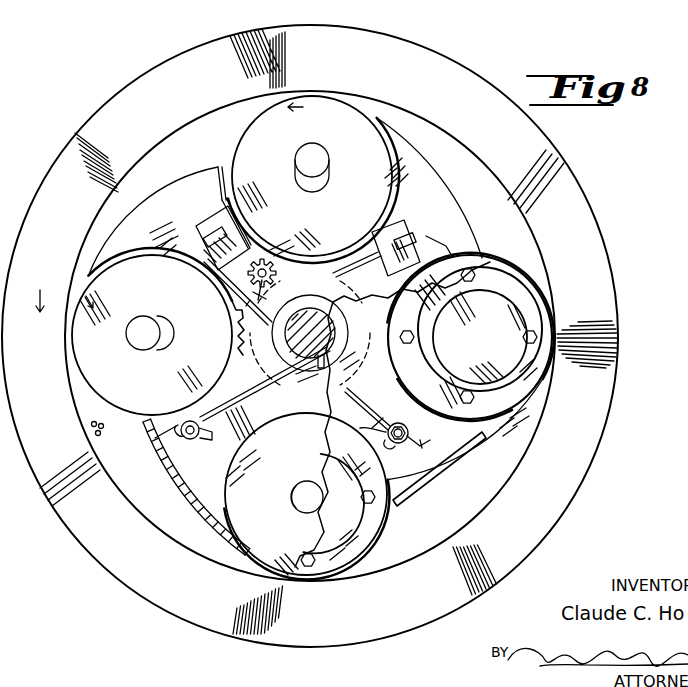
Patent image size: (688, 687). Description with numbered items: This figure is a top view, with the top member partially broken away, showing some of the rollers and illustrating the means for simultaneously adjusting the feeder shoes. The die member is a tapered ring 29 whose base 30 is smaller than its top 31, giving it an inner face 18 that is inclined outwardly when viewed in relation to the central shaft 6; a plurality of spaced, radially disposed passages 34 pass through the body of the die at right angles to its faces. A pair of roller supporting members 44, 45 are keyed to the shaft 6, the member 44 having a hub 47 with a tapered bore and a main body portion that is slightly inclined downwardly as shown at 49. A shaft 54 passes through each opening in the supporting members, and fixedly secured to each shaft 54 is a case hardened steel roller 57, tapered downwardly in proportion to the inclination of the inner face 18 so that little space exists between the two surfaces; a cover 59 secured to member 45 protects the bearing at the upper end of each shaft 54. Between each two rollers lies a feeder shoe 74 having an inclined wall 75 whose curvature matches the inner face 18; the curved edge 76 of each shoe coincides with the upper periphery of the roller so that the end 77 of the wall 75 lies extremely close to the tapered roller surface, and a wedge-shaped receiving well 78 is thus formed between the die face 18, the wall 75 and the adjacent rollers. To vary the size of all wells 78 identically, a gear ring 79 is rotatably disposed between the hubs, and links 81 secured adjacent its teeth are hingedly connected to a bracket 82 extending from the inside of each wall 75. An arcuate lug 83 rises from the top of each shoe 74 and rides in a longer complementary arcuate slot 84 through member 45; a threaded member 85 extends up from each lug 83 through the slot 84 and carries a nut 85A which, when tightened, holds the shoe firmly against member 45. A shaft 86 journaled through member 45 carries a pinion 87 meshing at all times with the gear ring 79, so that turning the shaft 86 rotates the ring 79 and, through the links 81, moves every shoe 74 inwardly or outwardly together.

The shaft 6 is at (330, 338).
The inner face 18 is at (175, 148).
The die ring 29 is at (406, 58).
The base 30 is at (220, 167).
The top 31 is at (147, 88).
The passages 34 is at (90, 428).
The roller supporting member 44 is at (474, 253).
The roller supporting member 45 is at (411, 471).
The hub 47 is at (283, 364).
The inclined body portion 49 is at (218, 450).
The shaft 54 is at (314, 144).
The roller 57 is at (72, 336).
The cover 59 is at (504, 310).
The feeder shoe 74 is at (140, 205).
The inclined wall 75 is at (232, 208).
The edge 76 is at (153, 250).
The end 77 is at (90, 275).
The receiving well 78 is at (137, 205).
The gear ring 79 is at (236, 326).
The links 81 is at (230, 278).
The bracket 82 is at (225, 462).
The arcuate lug 83 is at (216, 240).
The arcuate slots 84 is at (422, 442).
The threaded member 85 is at (206, 243).
The nut 85A is at (372, 428).
The shaft 86 is at (270, 262).
The pinion 87 is at (266, 266).